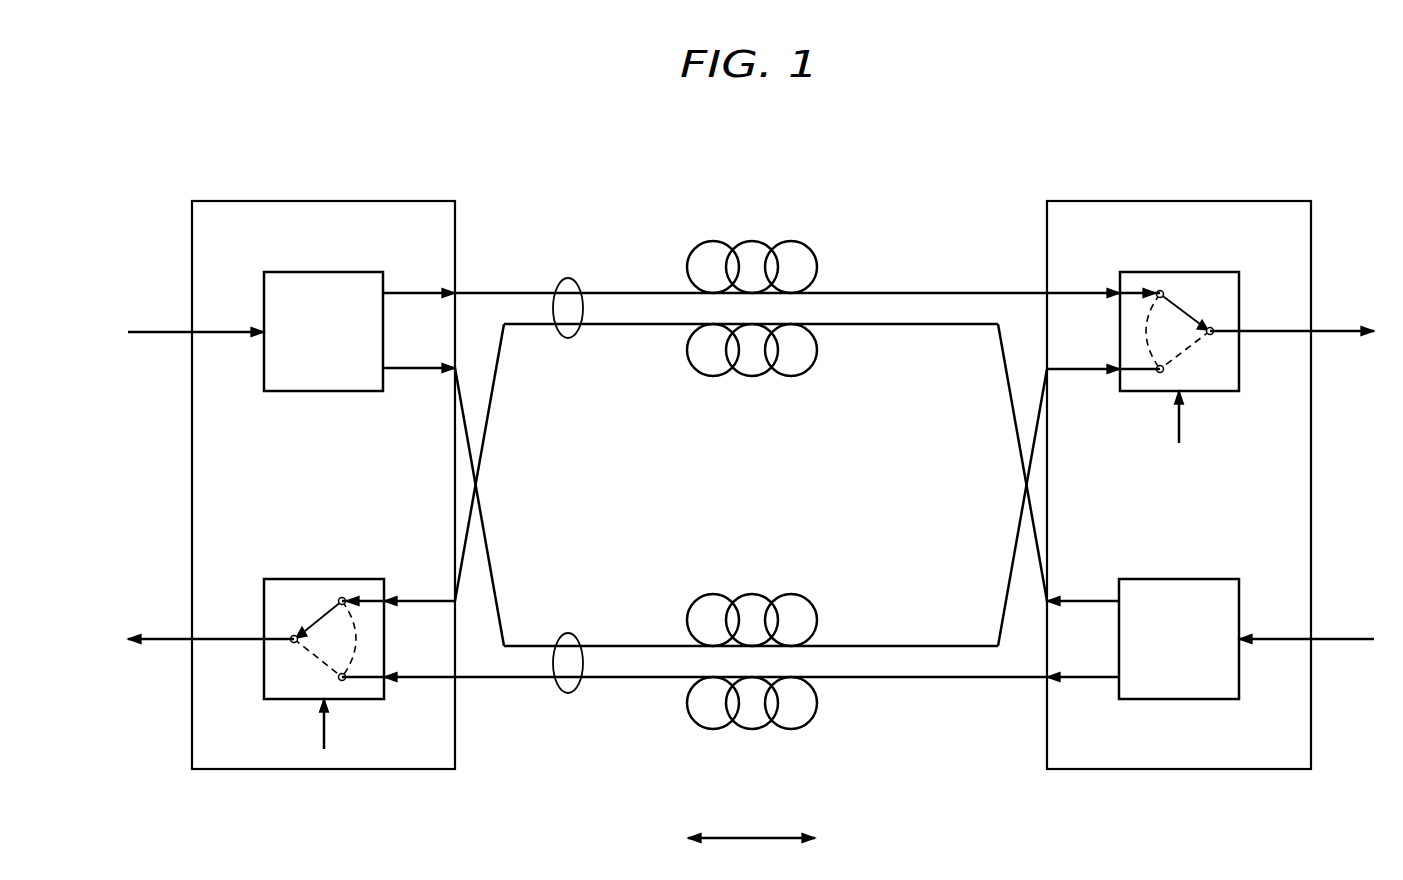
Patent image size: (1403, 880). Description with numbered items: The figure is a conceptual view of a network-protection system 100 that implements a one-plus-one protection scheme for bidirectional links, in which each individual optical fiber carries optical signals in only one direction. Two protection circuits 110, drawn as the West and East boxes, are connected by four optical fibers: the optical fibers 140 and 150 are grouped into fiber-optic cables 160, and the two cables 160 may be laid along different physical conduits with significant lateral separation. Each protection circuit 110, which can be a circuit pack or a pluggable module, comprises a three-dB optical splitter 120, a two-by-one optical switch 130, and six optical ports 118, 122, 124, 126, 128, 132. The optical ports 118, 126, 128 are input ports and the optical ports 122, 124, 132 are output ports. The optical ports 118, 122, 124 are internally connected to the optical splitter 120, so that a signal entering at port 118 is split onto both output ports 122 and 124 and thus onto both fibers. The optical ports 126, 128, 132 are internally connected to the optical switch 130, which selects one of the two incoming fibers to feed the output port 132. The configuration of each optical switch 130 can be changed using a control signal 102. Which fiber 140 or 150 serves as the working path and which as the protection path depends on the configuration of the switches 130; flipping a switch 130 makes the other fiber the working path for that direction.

The network-protection system 100 is at (766, 124).
The protection circuit 110 is at (388, 201).
The optical port 118 is at (1275, 668).
The optical splitter 120 is at (297, 272).
The optical port 122 is at (1081, 703).
The optical port 124 is at (418, 373).
The optical port 126 is at (1082, 373).
The optical port 128 is at (418, 681).
The optical switch 130 is at (297, 579).
The optical port 132 is at (1277, 337).
The control signal 102 is at (1207, 428).
The optical fiber 140 is at (752, 757).
The optical fiber 150 is at (752, 594).
The fiber-optic cable 160 is at (568, 633).